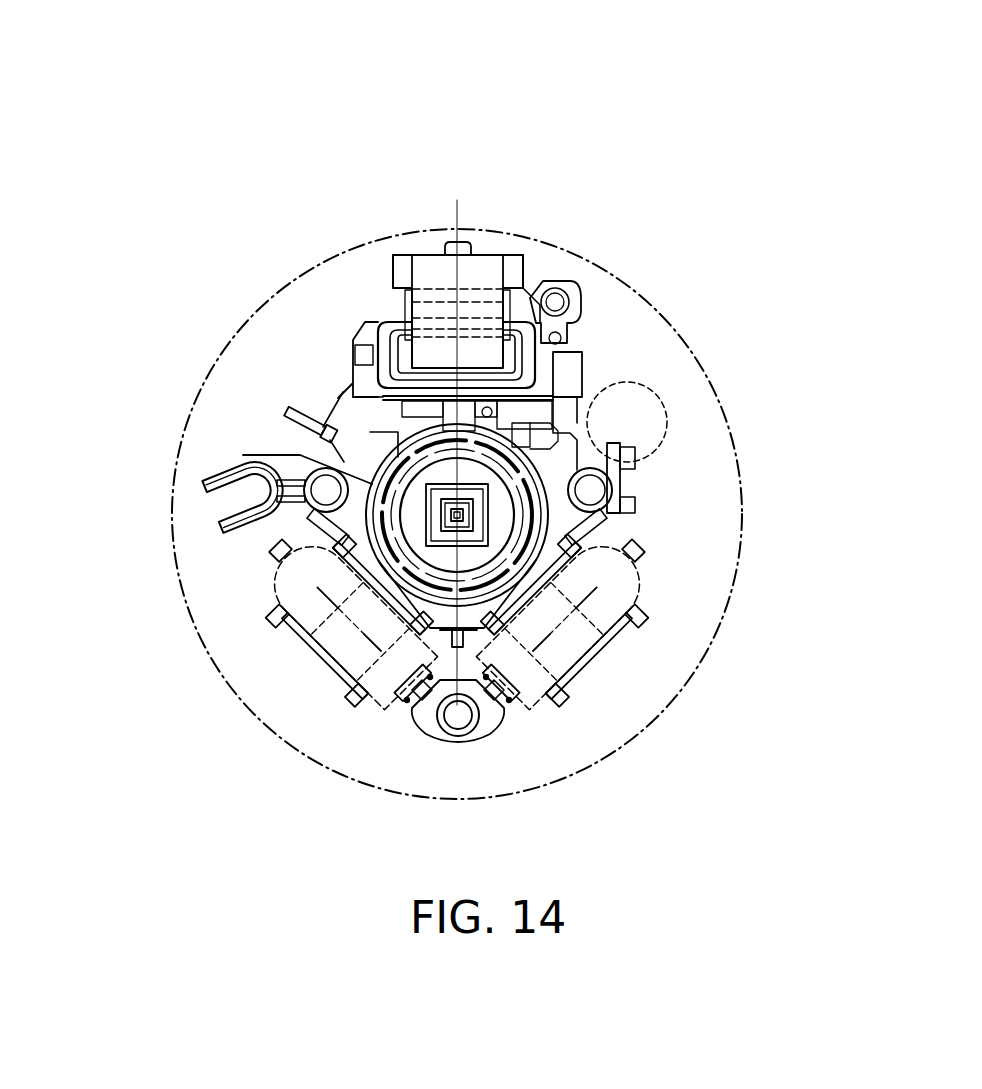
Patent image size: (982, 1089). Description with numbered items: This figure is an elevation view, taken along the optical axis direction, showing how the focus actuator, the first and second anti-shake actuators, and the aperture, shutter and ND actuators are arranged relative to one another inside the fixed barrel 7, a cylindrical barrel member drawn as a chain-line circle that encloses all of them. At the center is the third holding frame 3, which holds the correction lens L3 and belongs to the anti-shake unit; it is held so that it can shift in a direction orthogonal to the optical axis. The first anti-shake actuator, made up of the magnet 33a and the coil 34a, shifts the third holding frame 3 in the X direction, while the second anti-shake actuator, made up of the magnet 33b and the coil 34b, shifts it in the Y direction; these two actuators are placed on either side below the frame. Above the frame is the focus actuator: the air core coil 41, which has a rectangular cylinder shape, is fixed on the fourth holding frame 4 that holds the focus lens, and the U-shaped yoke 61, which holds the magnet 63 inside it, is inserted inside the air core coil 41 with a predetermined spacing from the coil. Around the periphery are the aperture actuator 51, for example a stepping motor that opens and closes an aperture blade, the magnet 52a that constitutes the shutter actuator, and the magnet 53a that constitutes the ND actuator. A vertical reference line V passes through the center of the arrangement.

The third holding frame 3 is at (583, 470).
The fourth holding frame 4 is at (283, 427).
The fixed barrel 7 is at (260, 718).
The air core coil 41 is at (560, 348).
The aperture actuator 51 is at (633, 427).
The magnet 52a is at (483, 692).
The magnet 53a is at (283, 438).
The yoke 61 is at (472, 265).
The magnet 63 is at (535, 277).
The magnet 33a is at (312, 620).
The coil 34a is at (290, 573).
The magnet 33b is at (637, 588).
The coil 34b is at (645, 552).
The correction lens L3 is at (395, 485).
The vertical axis V is at (457, 438).